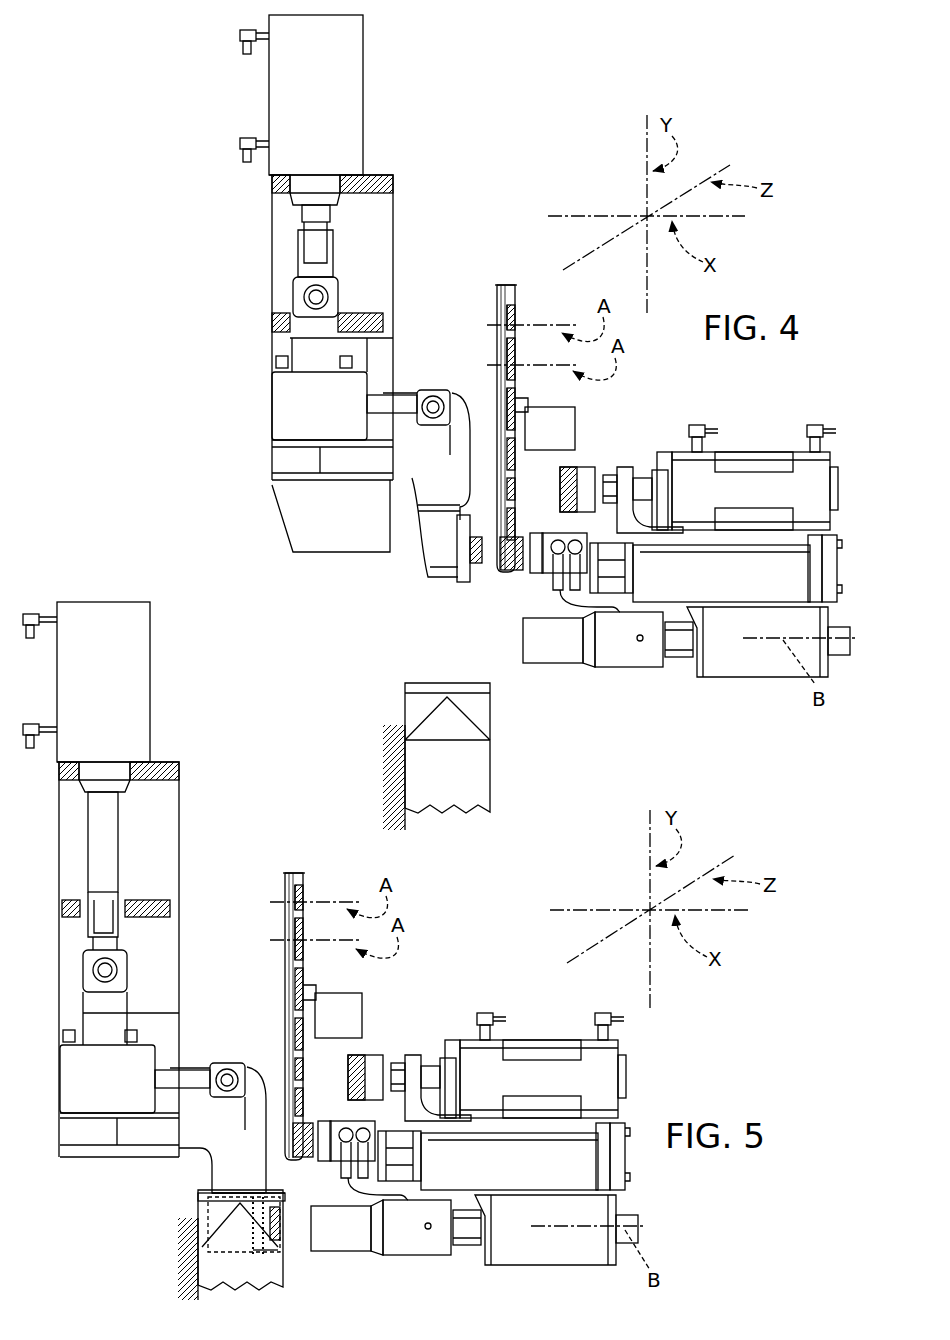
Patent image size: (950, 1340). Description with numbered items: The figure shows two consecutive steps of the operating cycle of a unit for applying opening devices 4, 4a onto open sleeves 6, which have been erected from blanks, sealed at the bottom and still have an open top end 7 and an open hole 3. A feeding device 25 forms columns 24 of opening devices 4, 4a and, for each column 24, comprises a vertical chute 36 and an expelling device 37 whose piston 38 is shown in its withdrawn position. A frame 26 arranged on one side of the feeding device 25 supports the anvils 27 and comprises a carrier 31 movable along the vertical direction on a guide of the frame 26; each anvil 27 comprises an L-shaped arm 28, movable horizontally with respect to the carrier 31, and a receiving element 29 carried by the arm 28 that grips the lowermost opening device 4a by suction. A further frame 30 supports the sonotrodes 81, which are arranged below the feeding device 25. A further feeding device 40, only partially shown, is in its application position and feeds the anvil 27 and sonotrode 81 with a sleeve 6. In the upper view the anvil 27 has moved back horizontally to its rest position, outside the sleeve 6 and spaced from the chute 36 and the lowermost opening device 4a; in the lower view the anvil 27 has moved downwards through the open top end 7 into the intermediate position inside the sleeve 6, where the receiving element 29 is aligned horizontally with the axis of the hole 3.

In FIG. 5, the hole 3 is at (289, 1219).
In FIG. 4, the opening devices 4 is at (528, 401).
In FIG. 5, the opening devices 4 is at (296, 965).
In FIG. 4, the lowermost opening device 4a is at (478, 535).
In FIG. 5, the lowermost opening device 4a is at (280, 1194).
In FIG. 4, the sleeve 6 is at (448, 778).
In FIG. 5, the sleeve 6 is at (243, 1262).
In FIG. 4, the top end 7 is at (420, 690).
In FIG. 5, the top end 7 is at (215, 1219).
In FIG. 4, the column 24 is at (502, 283).
In FIG. 5, the column 24 is at (289, 871).
In FIG. 4, the feeding device 25 is at (515, 283).
In FIG. 5, the feeding device 25 is at (301, 871).
In FIG. 4, the frame 26 is at (366, 250).
In FIG. 5, the frame 26 is at (160, 862).
In FIG. 4, the anvil 27 is at (400, 433).
In FIG. 5, the anvil 27 is at (224, 1052).
In FIG. 4, the arm 28 is at (407, 457).
In FIG. 5, the arm 28 is at (193, 1102).
In FIG. 4, the receiving element 29 is at (467, 580).
In FIG. 5, the receiving element 29 is at (264, 1262).
In FIG. 4, the frame 30 is at (741, 649).
In FIG. 5, the frame 30 is at (532, 1155).
In FIG. 5, the carrier 31 is at (87, 1076).
In FIG. 4, the chute 36 is at (489, 438).
In FIG. 5, the chute 36 is at (275, 1001).
In FIG. 4, the expelling device 37 is at (568, 571).
In FIG. 5, the expelling device 37 is at (405, 1160).
In FIG. 4, the piston 38 is at (527, 580).
In FIG. 5, the piston 38 is at (348, 1125).
In FIG. 4, the feeding device 40 is at (390, 764).
In FIG. 5, the feeding device 40 is at (191, 1255).
In FIG. 4, the sonotrode 81 is at (619, 656).
In FIG. 5, the sonotrode 81 is at (396, 1249).